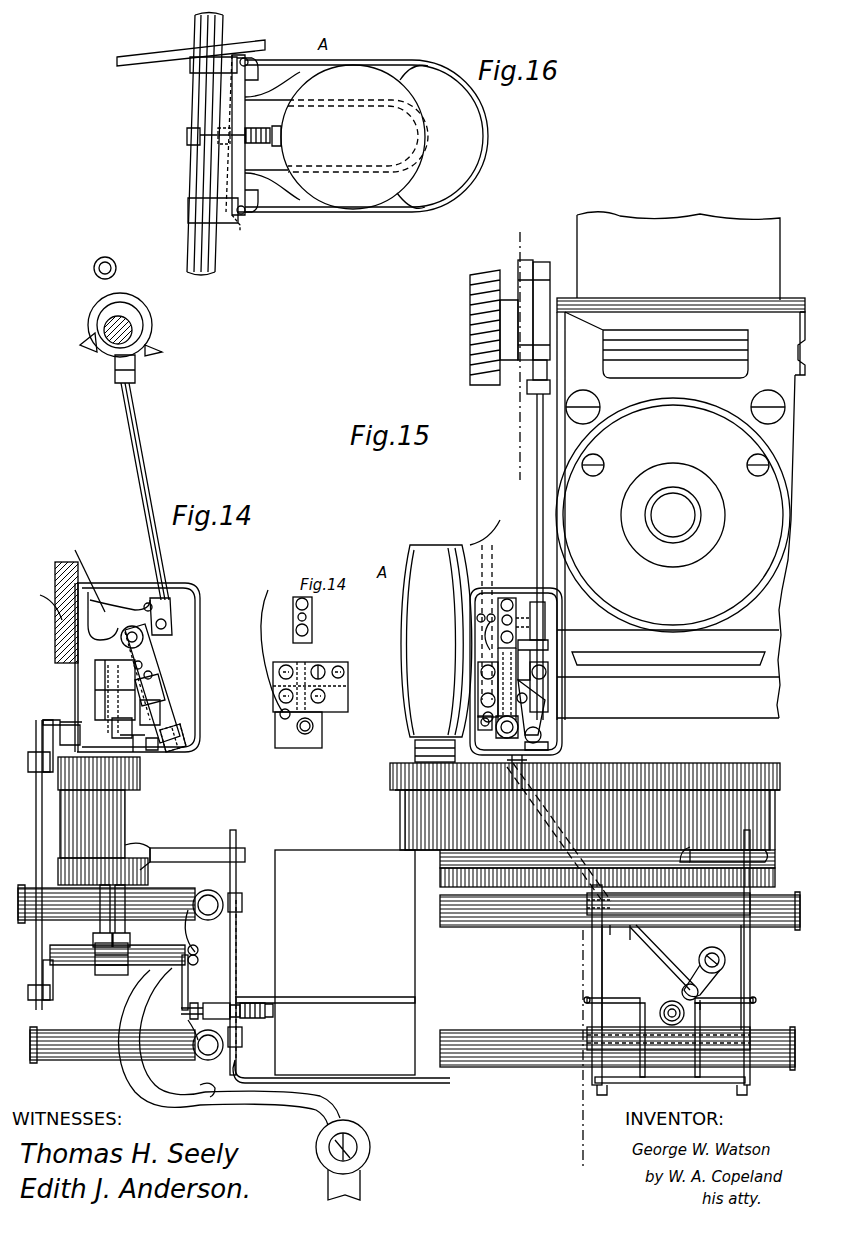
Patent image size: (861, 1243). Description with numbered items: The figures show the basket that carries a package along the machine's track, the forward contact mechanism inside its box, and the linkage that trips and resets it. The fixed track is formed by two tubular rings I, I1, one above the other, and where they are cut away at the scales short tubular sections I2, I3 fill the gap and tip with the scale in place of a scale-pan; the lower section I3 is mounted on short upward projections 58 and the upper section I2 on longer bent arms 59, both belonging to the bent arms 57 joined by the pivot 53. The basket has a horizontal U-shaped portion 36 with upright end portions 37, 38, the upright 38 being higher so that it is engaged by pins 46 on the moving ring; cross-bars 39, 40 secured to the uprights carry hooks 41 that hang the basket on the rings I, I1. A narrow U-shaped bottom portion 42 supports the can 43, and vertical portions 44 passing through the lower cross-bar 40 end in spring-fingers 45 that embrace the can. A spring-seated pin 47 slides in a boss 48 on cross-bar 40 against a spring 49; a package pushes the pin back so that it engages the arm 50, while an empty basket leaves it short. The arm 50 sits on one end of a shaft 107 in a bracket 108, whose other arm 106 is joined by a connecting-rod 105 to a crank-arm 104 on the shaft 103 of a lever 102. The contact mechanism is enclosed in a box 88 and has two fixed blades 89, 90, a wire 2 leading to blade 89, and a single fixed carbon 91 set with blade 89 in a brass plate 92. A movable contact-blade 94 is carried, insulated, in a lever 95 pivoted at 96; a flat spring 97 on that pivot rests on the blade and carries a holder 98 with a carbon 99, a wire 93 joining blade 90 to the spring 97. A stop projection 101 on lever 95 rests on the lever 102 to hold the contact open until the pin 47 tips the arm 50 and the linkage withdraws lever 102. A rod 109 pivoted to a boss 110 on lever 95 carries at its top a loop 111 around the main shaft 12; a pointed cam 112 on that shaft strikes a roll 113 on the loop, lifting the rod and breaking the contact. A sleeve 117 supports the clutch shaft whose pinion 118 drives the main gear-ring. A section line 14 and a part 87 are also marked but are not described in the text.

In FIG. 14, the wire 2 is at (98, 633).
In FIG. 14A, the wire 2 is at (268, 668).
In FIG. 15, the wire 2 is at (480, 522).
In FIG. 14, the main shaft 12 is at (133, 330).
In FIG. 15, the section line 14 is at (547, 694).
In FIG. 16, the horizontal U-shaped portion 36 is at (486, 140).
In FIG. 14, the horizontal U-shaped portion 36 is at (430, 1084).
In FIG. 15, the horizontal U-shaped portion 36 is at (748, 1080).
In FIG. 16, the upright end portion 37 is at (242, 222).
In FIG. 14, the upright end portion 37 is at (238, 942).
In FIG. 15, the upright end portion 37 is at (592, 977).
In FIG. 16, the upright end portion 38 is at (243, 54).
In FIG. 14, the upright end portion 38 is at (237, 833).
In FIG. 15, the upright end portion 38 is at (750, 832).
In FIG. 16, the cross-bar 39 is at (235, 92).
In FIG. 14, the cross-bar 39 is at (242, 900).
In FIG. 15, the cross-bar 39 is at (668, 904).
In FIG. 14, the cross-bar 40 is at (242, 1047).
In FIG. 15, the cross-bar 40 is at (668, 1038).
In FIG. 16, the hooks 41 is at (200, 68).
In FIG. 14, the hooks 41 is at (208, 890).
In FIG. 16, the U-shaped bottom portion 42 is at (365, 108).
In FIG. 16, the package or can 43 is at (418, 162).
In FIG. 14, the package or can 43 is at (345, 850).
In FIG. 15, the vertical portions 44 is at (640, 1016).
In FIG. 16, the spring-fingers 45 is at (410, 72).
In FIG. 14, the spring-fingers 45 is at (340, 1000).
In FIG. 15, the spring-fingers 45 is at (587, 999).
In FIG. 16, the pins 46 is at (140, 55).
In FIG. 14, the pins 46 is at (175, 848).
In FIG. 15, the pins 46 is at (766, 856).
In FIG. 16, the spring-seated pin 47 is at (188, 138).
In FIG. 14, the spring-seated pin 47 is at (275, 1011).
In FIG. 15, the spring-seated pin 47 is at (664, 1003).
In FIG. 14, the boss 48 is at (232, 1004).
In FIG. 15, the boss 48 is at (663, 1006).
In FIG. 16, the spring 49 is at (258, 145).
In FIG. 14, the spring 49 is at (245, 1020).
In FIG. 14, the arm 50 is at (189, 988).
In FIG. 15, the arm 50 is at (710, 993).
In FIG. 14, the pivot 53 is at (370, 1146).
In FIG. 14, the bent arms 57 is at (270, 1108).
In FIG. 14, the upward projections 58 is at (209, 1085).
In FIG. 15, the upward projections 58 is at (737, 1090).
In FIG. 14, the bent arms 59 is at (125, 1005).
In FIG. 15, the bent arms 59 is at (592, 961).
In FIG. 14, the motor casing 87 is at (138, 880).
In FIG. 15, the motor casing 87 is at (600, 837).
In FIG. 14, the box 88 is at (178, 590).
In FIG. 15, the box 88 is at (513, 592).
In FIG. 14, the fixed blade 89 is at (112, 690).
In FIG. 14A, the fixed blade 89 is at (280, 712).
In FIG. 15, the fixed blade 89 is at (480, 690).
In FIG. 14A, the fixed blade 90 is at (348, 687).
In FIG. 15, the fixed blade 90 is at (548, 685).
In FIG. 14, the fixed carbon 91 is at (136, 752).
In FIG. 14A, the fixed carbon 91 is at (310, 730).
In FIG. 14, the brass plate 92 is at (112, 722).
In FIG. 14A, the brass plate 92 is at (285, 740).
In FIG. 15, the brass plate 92 is at (480, 718).
In FIG. 14A, the wire 93 is at (320, 668).
In FIG. 15, the wire 93 is at (500, 619).
In FIG. 14, the movable contact-blade 94 is at (160, 700).
In FIG. 14, the lever 95 is at (148, 655).
In FIG. 15, the lever 95 is at (548, 645).
In FIG. 14, the pivot 96 is at (130, 625).
In FIG. 14, the flat spring 97 is at (157, 680).
In FIG. 14A, the flat spring 97 is at (312, 638).
In FIG. 15, the flat spring 97 is at (498, 662).
In FIG. 14, the holder 98 is at (198, 740).
In FIG. 15, the holder 98 is at (415, 749).
In FIG. 14, the carbon 99 is at (160, 748).
In FIG. 15, the carbon 99 is at (495, 728).
In FIG. 14, the stop projection 101 is at (150, 690).
In FIG. 15, the stop projection 101 is at (540, 700).
In FIG. 14, the lever 102 is at (165, 720).
In FIG. 15, the lever 102 is at (542, 728).
In FIG. 14, the shaft 103 is at (43, 722).
In FIG. 15, the shaft 103 is at (545, 745).
In FIG. 14, the crank-arm 104 is at (43, 742).
In FIG. 15, the crank-arm 104 is at (590, 760).
In FIG. 14, the connecting-rod 105 is at (37, 835).
In FIG. 15, the connecting-rod 105 is at (558, 828).
In FIG. 14, the arm 106 is at (45, 1000).
In FIG. 15, the arm 106 is at (683, 990).
In FIG. 14, the shaft 107 is at (192, 946).
In FIG. 15, the shaft 107 is at (722, 958).
In FIG. 14, the bracket 108 is at (108, 975).
In FIG. 15, the bracket 108 is at (703, 955).
In FIG. 14, the rod 109 is at (148, 470).
In FIG. 15, the rod 109 is at (537, 456).
In FIG. 14, the boss or arm 110 is at (175, 620).
In FIG. 15, the boss or arm 110 is at (545, 622).
In FIG. 14, the loop 111 is at (89, 300).
In FIG. 15, the loop 111 is at (545, 260).
In FIG. 14, the pointed cam 112 is at (82, 343).
In FIG. 15, the pointed cam 112 is at (527, 362).
In FIG. 14, the roll 113 is at (95, 264).
In FIG. 15, the roll 113 is at (518, 266).
In FIG. 15, the sleeve 117 is at (436, 641).
In FIG. 14, the pinion 118 is at (104, 821).
In FIG. 15, the pinion 118 is at (392, 780).
In FIG. 16, the ring I is at (200, 30).
In FIG. 14, the ring I is at (165, 898).
In FIG. 15, the ring I is at (790, 900).
In FIG. 14, the ring I1 is at (70, 1062).
In FIG. 15, the ring I1 is at (782, 1038).
In FIG. 16, the upper track section I2 is at (210, 176).
In FIG. 14, the upper track section I2 is at (222, 917).
In FIG. 15, the upper track section I2 is at (630, 940).
In FIG. 14, the lower track section I3 is at (195, 1032).